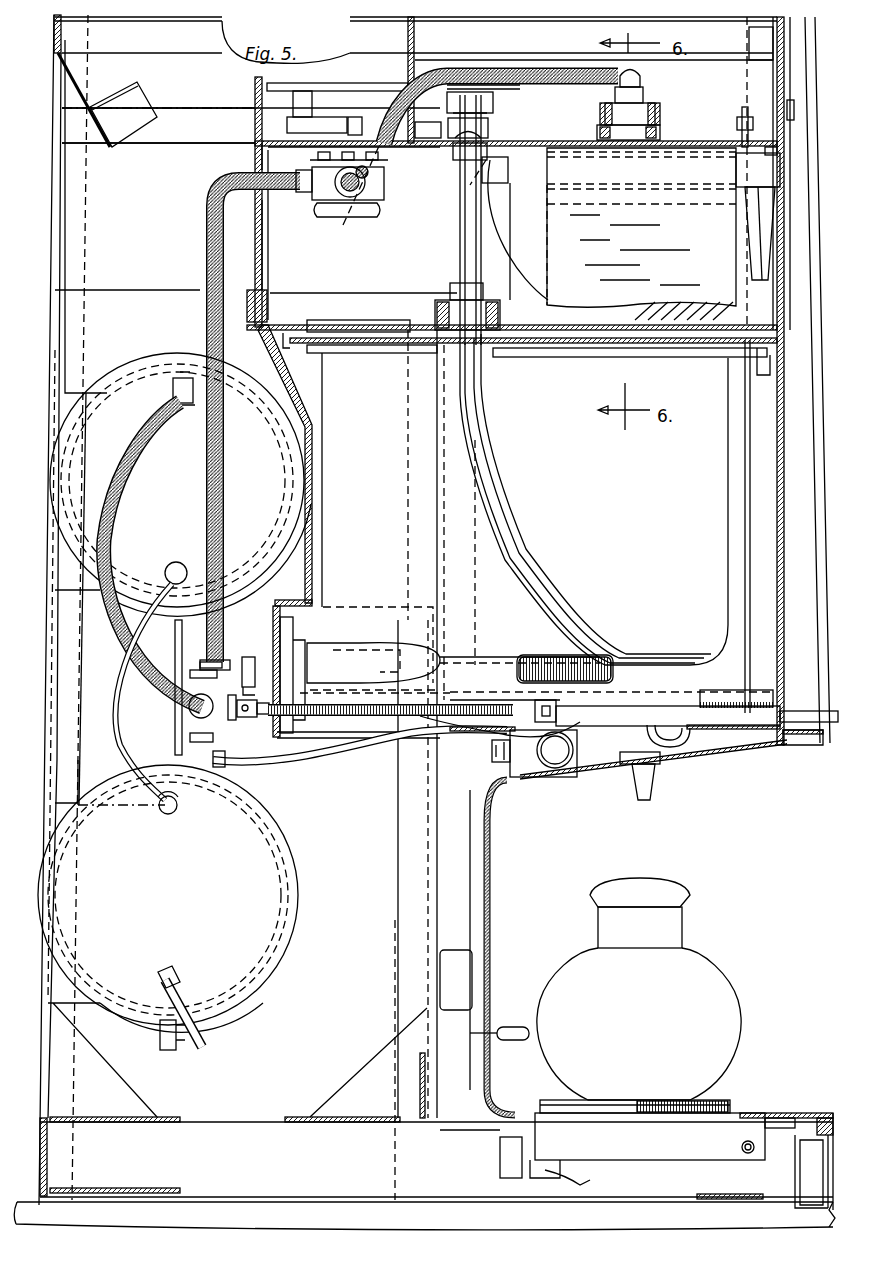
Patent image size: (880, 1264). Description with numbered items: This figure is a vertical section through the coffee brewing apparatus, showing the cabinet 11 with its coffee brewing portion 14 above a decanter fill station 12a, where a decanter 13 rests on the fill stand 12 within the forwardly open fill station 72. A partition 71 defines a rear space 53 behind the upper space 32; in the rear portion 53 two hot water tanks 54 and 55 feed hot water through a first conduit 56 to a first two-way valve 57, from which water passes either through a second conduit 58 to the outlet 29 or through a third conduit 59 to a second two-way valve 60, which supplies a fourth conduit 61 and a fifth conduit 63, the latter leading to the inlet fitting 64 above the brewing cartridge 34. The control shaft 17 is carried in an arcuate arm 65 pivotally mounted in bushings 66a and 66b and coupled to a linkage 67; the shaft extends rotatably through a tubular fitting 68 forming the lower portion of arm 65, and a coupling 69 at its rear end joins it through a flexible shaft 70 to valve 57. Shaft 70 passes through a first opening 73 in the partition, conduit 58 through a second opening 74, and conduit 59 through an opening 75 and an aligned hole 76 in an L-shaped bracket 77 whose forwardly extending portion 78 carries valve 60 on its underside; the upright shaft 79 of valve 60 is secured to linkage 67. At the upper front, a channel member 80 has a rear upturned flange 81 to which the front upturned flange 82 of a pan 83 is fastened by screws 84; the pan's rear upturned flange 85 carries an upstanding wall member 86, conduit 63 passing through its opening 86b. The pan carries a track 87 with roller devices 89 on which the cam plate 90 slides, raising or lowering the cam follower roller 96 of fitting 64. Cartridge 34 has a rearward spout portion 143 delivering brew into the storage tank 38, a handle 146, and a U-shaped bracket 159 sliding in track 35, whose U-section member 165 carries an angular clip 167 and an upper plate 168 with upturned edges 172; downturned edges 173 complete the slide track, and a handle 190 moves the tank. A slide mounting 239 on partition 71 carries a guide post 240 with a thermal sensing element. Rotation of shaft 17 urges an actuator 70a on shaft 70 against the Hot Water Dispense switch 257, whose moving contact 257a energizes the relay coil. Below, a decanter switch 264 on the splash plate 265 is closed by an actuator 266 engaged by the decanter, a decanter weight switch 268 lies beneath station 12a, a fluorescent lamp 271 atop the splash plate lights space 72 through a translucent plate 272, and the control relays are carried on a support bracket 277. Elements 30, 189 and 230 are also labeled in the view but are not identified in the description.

The cabinet 11 is at (52, 42).
The fill stand 12 is at (732, 1102).
The decanter fill station 12a is at (782, 1114).
The decanter 13 is at (718, 998).
The coffee brewing portion 14 is at (812, 297).
The control shaft 17 is at (830, 710).
The outlet 29 is at (652, 785).
The drain fitting 30 is at (630, 765).
The upper space 32 is at (380, 274).
The cartridge 34 is at (520, 258).
The track 35 is at (540, 286).
The storage tank 38 is at (712, 638).
The rear portion 53 is at (358, 876).
The hot water tank 54 is at (230, 867).
The hot water tank 55 is at (265, 494).
The first conduit 56 is at (115, 530).
The first two-way valve 57 is at (183, 672).
The second conduit 58 is at (325, 748).
The third conduit 59 is at (204, 246).
The second two-way valve 60 is at (382, 188).
The fourth conduit 61 is at (352, 197).
The fifth conduit 63 is at (487, 69).
The inlet fitting 64 is at (640, 102).
The arcuate arm 65 is at (503, 556).
The bushing 66a is at (440, 300).
The bushing 66b is at (488, 128).
The linkage 67 is at (337, 98).
The tubular fitting 68 is at (707, 722).
The coupling 69 is at (546, 698).
The flexible shaft 70 is at (345, 718).
The actuator 70a is at (242, 690).
The partition 71 is at (253, 92).
The fill station 72 is at (758, 887).
The first opening 73 is at (298, 748).
The second opening 74 is at (387, 730).
The opening 75 is at (252, 196).
The hole 76 is at (256, 163).
The L-shaped bracket 77 is at (263, 248).
The forwardly extending portion 78 is at (393, 145).
The upright shaft 79 is at (262, 132).
The channel member 80 is at (786, 74).
The rear upturned flange 81 is at (750, 125).
The front upturned flange 82 is at (737, 122).
The pan 83 is at (668, 142).
The screws 84 is at (742, 110).
The upturned flange 85 is at (415, 128).
The upstanding wall member 86 is at (407, 42).
The opening 86b is at (470, 68).
The track 87 is at (600, 133).
The roller devices 89 is at (660, 122).
The cam plate 90 is at (600, 118).
The cam follower roller 96 is at (605, 108).
The rearward spout portion 143 is at (497, 195).
The handle 146 is at (778, 151).
The U-shaped bracket 159 is at (770, 184).
The wide-web U-section member 165 is at (712, 184).
The angular clip 167 is at (655, 198).
The upper plate 168 is at (512, 325).
The longitudinal edges 172 is at (332, 318).
The longitudinal edges 173 is at (362, 354).
The strut 189 is at (760, 263).
The handle 190 is at (765, 375).
The pipe 230 is at (418, 695).
The slide mounting 239 is at (300, 612).
The guide post 240 is at (372, 660).
The Hot Water Dispense switch 257 is at (242, 718).
The moving contact 257a is at (248, 672).
The decanter switch 264 is at (470, 950).
The splash plate 265 is at (490, 908).
The actuator 266 is at (508, 1025).
The decanter weight switch 268 is at (555, 1157).
The fluorescent lamp 271 is at (578, 748).
The light diffusing translucent plate 272 is at (535, 782).
The support bracket 277 is at (105, 80).